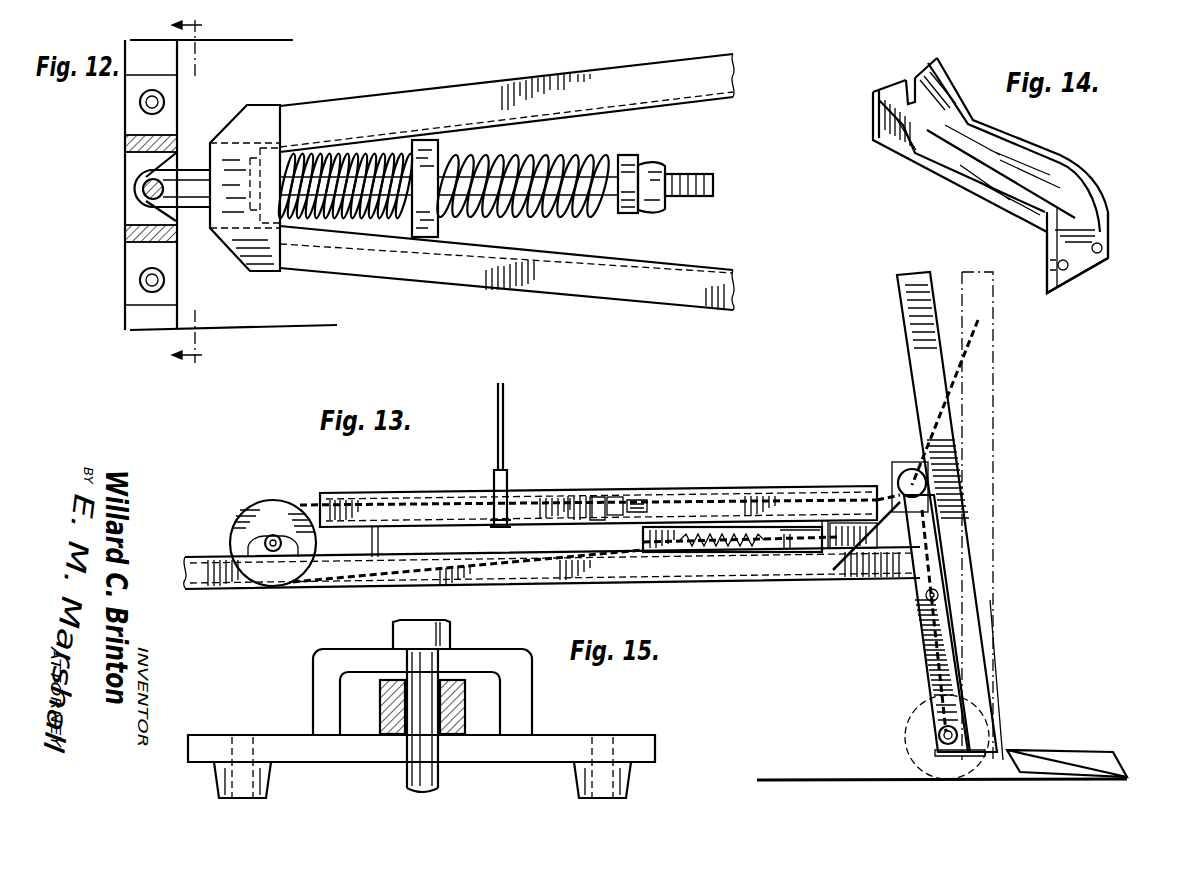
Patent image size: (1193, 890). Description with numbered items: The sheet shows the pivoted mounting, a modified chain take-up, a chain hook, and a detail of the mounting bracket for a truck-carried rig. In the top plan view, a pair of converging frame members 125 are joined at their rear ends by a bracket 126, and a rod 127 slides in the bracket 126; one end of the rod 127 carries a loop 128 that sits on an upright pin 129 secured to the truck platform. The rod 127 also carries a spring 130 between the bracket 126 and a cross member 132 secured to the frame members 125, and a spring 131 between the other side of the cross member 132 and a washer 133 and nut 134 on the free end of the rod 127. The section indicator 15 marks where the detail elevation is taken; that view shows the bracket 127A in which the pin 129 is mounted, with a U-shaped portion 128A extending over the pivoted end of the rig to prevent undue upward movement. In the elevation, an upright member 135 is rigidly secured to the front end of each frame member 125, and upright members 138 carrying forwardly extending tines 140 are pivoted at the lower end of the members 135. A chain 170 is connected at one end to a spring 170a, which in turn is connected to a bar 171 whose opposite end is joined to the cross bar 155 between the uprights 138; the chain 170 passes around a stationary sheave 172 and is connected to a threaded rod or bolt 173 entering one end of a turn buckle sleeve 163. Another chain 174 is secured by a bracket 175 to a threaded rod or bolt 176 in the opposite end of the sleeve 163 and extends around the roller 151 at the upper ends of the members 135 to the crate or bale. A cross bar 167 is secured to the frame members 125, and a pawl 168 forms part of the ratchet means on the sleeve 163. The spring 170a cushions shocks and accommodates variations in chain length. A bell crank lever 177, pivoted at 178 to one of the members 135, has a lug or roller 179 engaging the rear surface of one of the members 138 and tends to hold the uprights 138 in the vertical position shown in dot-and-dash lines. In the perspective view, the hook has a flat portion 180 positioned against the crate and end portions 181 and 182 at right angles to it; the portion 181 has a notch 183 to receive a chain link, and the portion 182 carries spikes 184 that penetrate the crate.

In FIG. 12, the section line 15- 15 is at (174, 189).
In FIG. 12, the frame members 125 is at (596, 90).
In FIG. 12, the bracket 126 is at (257, 122).
In FIG. 12, the rod 127 is at (450, 175).
In FIG. 12, the loop 128 is at (188, 168).
In FIG. 15, the loop 128 is at (465, 700).
In FIG. 12, the upright pin 129 is at (142, 186).
In FIG. 15, the upright pin 129 is at (415, 640).
In FIG. 12, the spring 130 is at (305, 158).
In FIG. 12, the spring 131 is at (550, 160).
In FIG. 12, the cross member 132 is at (424, 150).
In FIG. 12, the washer 133 is at (627, 165).
In FIG. 12, the nut 134 is at (655, 178).
In FIG. 13, the upright member 135 is at (923, 642).
In FIG. 13, the upright members 138 is at (947, 485).
In FIG. 13, the tine 140 is at (1050, 750).
In FIG. 13, the roller 151 is at (910, 476).
In FIG. 13, the bar 155 is at (970, 506).
In FIG. 13, the turn buckle sleeve 163 is at (580, 495).
In FIG. 13, the cross bar 167 is at (504, 418).
In FIG. 13, the pawl 168 is at (509, 472).
In FIG. 13, the chain 170 is at (512, 565).
In FIG. 13, the spring 170a is at (746, 556).
In FIG. 13, the bar 171 is at (824, 576).
In FIG. 13, the stationary sheave 172 is at (256, 526).
In FIG. 13, the threaded rod or bolt 173 is at (398, 497).
In FIG. 13, the chain 174 is at (730, 495).
In FIG. 13, the bracket 175 is at (642, 498).
In FIG. 13, the threaded rod or bolt 176 is at (612, 497).
In FIG. 13, the bell crank lever 177 is at (913, 594).
In FIG. 13, the pivot 178 is at (990, 612).
In FIG. 13, the lug or roller 179 is at (942, 552).
In FIG. 14, the flat portion 180 is at (967, 172).
In FIG. 14, the end portion 181 is at (922, 76).
In FIG. 14, the end portion 182 is at (1100, 235).
In FIG. 14, the notch 183 is at (908, 86).
In FIG. 14, the spikes 184 is at (1097, 254).
In FIG. 15, the bracket 127A is at (567, 735).
In FIG. 15, the U-shaped portion 128A is at (338, 666).